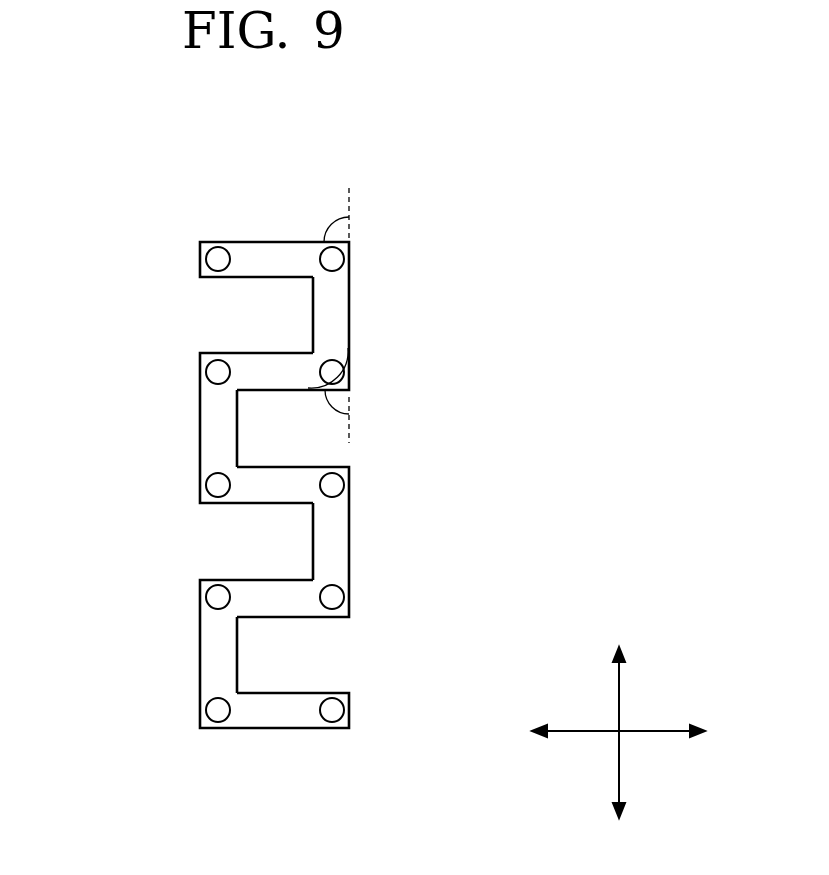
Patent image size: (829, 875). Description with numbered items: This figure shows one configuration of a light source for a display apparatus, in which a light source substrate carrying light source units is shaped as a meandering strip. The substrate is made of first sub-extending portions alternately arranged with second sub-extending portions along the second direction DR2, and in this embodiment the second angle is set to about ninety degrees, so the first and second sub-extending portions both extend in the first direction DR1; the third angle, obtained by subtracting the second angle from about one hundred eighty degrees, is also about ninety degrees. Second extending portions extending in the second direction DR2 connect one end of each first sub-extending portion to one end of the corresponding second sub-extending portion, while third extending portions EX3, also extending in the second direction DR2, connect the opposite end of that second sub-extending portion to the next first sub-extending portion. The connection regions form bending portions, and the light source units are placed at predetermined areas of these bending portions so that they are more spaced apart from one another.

The third extending portion EX3 is at (217, 438).
The first direction DR1 is at (641, 732).
The second direction DR2 is at (621, 718).